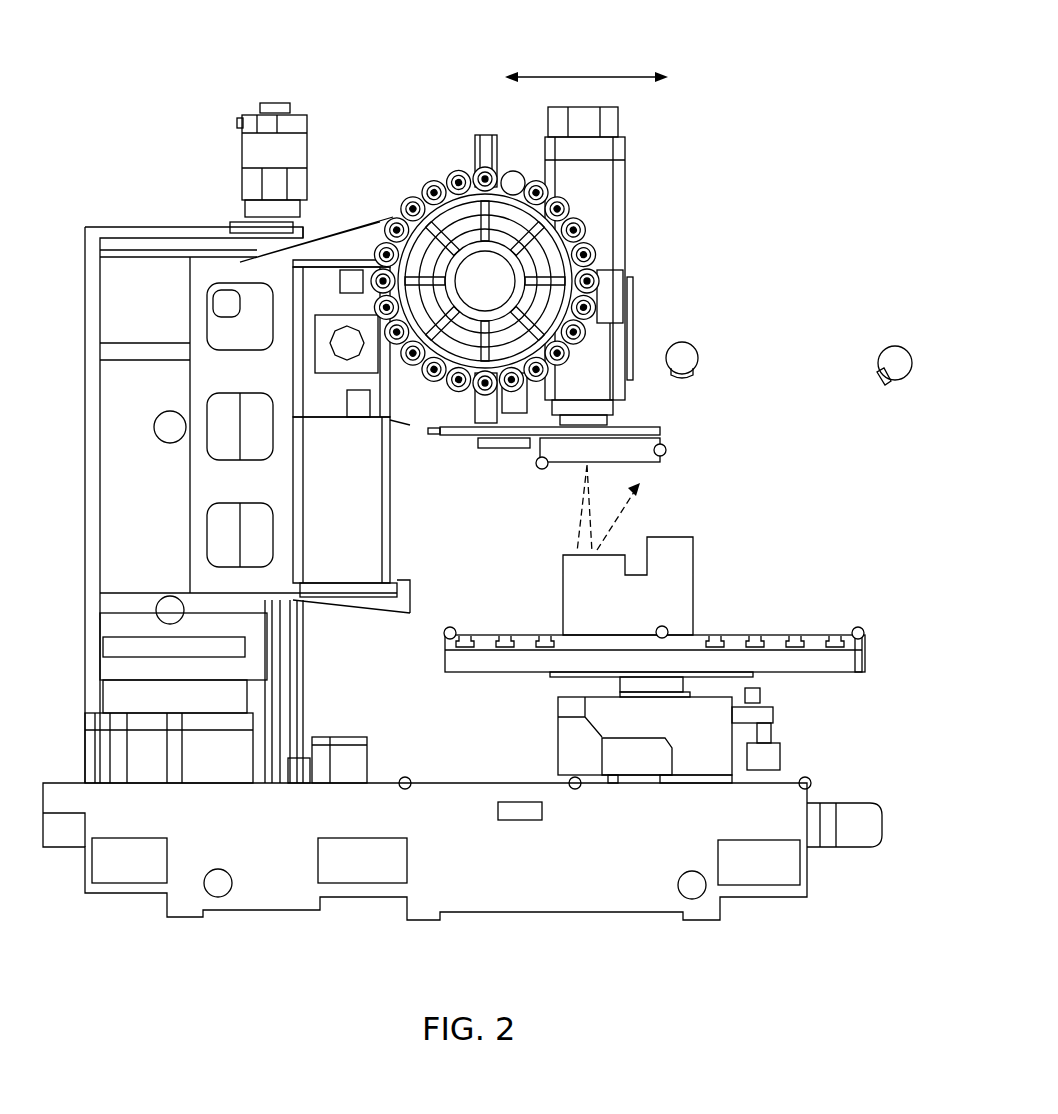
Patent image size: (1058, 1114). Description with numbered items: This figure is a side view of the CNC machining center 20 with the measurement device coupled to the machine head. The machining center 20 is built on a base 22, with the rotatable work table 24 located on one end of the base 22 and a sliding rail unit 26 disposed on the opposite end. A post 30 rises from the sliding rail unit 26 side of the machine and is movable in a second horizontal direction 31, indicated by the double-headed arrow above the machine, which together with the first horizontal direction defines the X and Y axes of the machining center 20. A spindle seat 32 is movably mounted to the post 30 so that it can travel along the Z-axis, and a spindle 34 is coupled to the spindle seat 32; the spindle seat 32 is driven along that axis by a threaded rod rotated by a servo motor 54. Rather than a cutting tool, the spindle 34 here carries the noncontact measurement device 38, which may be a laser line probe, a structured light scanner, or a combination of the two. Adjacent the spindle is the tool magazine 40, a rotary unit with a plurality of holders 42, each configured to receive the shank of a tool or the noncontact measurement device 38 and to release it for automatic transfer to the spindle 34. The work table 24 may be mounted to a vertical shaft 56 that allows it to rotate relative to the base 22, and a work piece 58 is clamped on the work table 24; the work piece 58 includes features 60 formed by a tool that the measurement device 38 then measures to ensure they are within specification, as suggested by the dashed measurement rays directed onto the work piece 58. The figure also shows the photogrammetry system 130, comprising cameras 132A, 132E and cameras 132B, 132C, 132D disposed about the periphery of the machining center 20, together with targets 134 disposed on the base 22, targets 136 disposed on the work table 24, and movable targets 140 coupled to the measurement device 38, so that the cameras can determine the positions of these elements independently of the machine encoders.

The CNC machining center 20 is at (762, 155).
The base 22 is at (568, 893).
The rotatable work table 24 is at (867, 648).
The sliding rail unit 26 is at (353, 622).
The post 30 is at (230, 478).
The second horizontal direction 31 is at (580, 77).
The spindle seat 32 is at (610, 350).
The spindle 34 is at (607, 423).
The noncontact measurement device 38 is at (668, 462).
The tool magazine 40 is at (405, 152).
The holders 42 is at (456, 182).
The servo motor 54 is at (620, 115).
The vertical shaft 56 is at (620, 687).
The work piece 58 is at (693, 597).
The features 60 is at (628, 545).
The photogrammetry system 130 is at (828, 248).
The camera 132A is at (735, 343).
The camera 132B is at (875, 331).
The camera 132C is at (875, 331).
The camera 132D is at (888, 347).
The camera 132E is at (697, 350).
The targets 134 is at (406, 776).
The targets 136 is at (452, 627).
The movable targets 140 is at (663, 444).